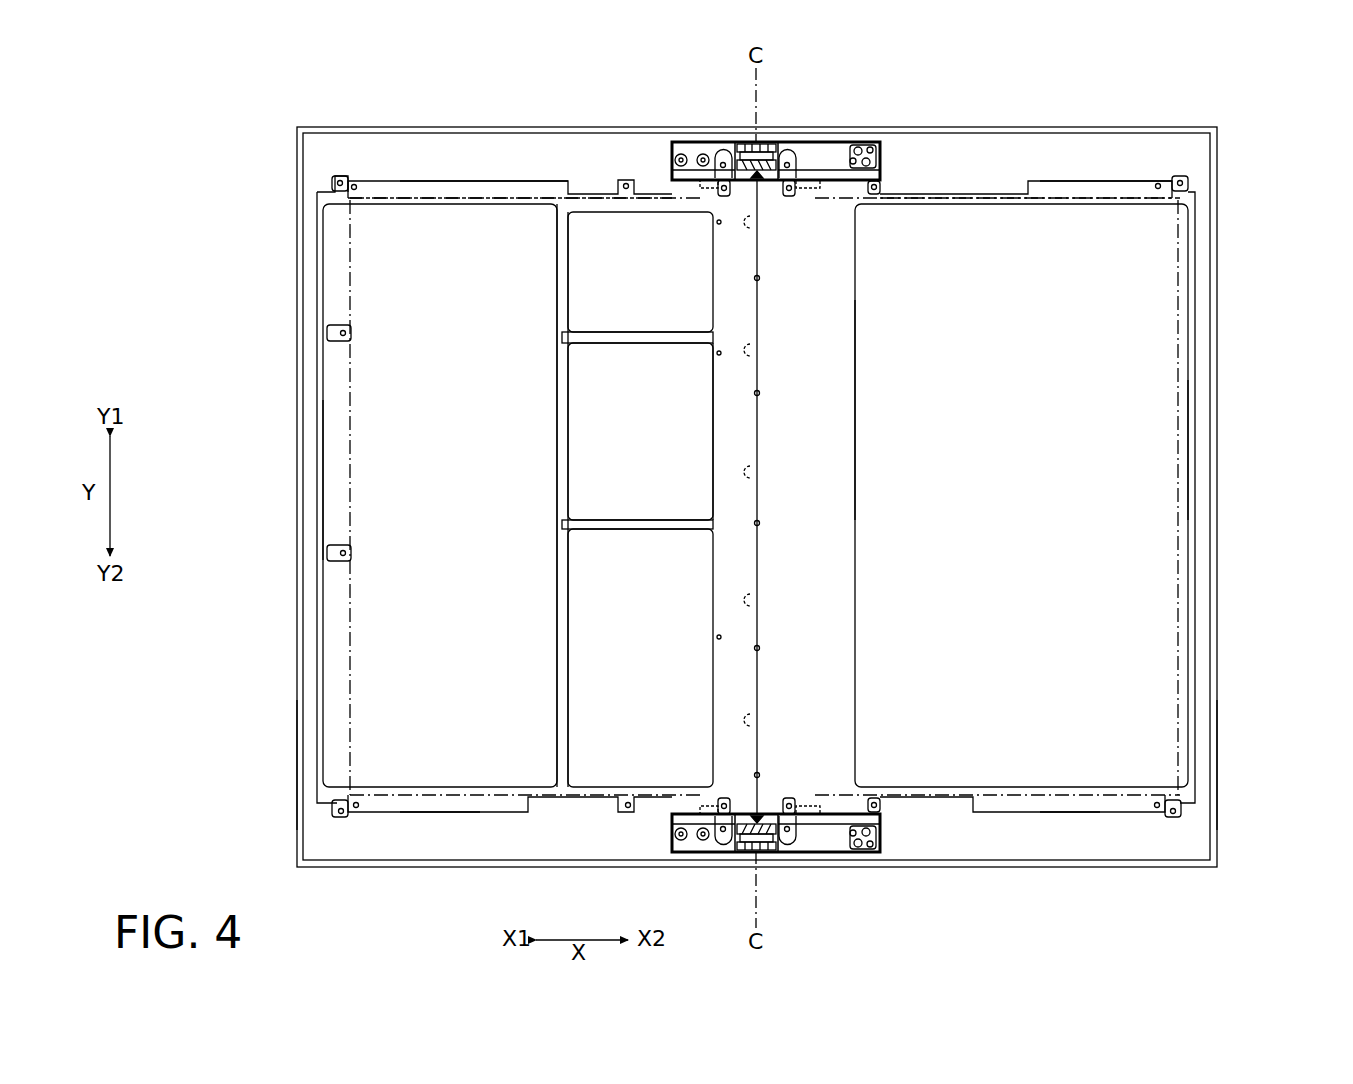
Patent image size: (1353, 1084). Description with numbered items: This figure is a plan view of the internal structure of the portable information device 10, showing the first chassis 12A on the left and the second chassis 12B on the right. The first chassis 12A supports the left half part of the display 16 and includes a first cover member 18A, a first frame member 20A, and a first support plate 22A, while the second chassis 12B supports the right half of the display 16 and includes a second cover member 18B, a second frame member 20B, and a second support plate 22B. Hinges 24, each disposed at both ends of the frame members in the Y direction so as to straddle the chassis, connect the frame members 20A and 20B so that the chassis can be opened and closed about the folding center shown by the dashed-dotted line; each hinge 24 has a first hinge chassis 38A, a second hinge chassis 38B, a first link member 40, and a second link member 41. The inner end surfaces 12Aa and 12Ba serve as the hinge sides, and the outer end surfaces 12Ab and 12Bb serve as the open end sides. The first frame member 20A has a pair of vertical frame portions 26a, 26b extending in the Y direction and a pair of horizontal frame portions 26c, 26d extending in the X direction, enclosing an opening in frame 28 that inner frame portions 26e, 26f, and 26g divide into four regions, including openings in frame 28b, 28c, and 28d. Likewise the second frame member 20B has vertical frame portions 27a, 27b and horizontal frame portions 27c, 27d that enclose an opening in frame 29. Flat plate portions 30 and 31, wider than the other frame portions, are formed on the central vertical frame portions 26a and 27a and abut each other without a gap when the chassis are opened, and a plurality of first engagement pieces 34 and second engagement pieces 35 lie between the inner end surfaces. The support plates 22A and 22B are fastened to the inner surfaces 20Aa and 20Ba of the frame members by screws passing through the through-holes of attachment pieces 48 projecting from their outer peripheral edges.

The portable information device 10 is at (211, 83).
The first chassis 12A is at (397, 100).
The second chassis 12B is at (925, 100).
The inner end surface 12Aa is at (757, 548).
The outer end surface 12Ab is at (297, 765).
The inner end surface 12Ba is at (755, 572).
The outer end surface 12Bb is at (1217, 765).
The display 16 is at (765, 496).
The first cover member 18A is at (471, 868).
The second cover member 18B is at (1040, 868).
The first frame member 20A is at (405, 176).
The inner surface 20Aa is at (517, 180).
The second frame member 20B is at (1062, 178).
The inner surface 20Ba is at (1120, 181).
The first support plate 22A is at (452, 196).
The second support plate 22B is at (987, 196).
The hinge 24 is at (799, 140).
The vertical frame portion 26a is at (735, 462).
The vertical frame portion 26b is at (323, 478).
The horizontal frame portion 26c is at (425, 192).
The horizontal frame portion 26d is at (425, 800).
The inner frame portion 26e is at (563, 428).
The inner frame portion 26f is at (615, 338).
The inner frame portion 26g is at (623, 523).
The vertical frame portion 27a is at (855, 450).
The vertical frame portion 27b is at (1188, 438).
The horizontal frame portion 27c is at (1083, 192).
The horizontal frame portion 27d is at (1055, 800).
The opening in frame 28 is at (502, 607).
The opening in frame 28b is at (636, 248).
The opening in frame 28c is at (640, 422).
The opening in frame 28d is at (662, 657).
The opening in frame 29 is at (1047, 607).
The flat plate portion 30 is at (735, 380).
The flat plate portion 31 is at (855, 356).
The first engagement piece 34 is at (797, 776).
The second engagement piece 35 is at (797, 720).
The first hinge chassis 38A is at (692, 150).
The second hinge chassis 38B is at (836, 150).
The first link member 40 is at (762, 150).
The second link member 41 is at (745, 146).
The attachment piece 48 is at (626, 183).